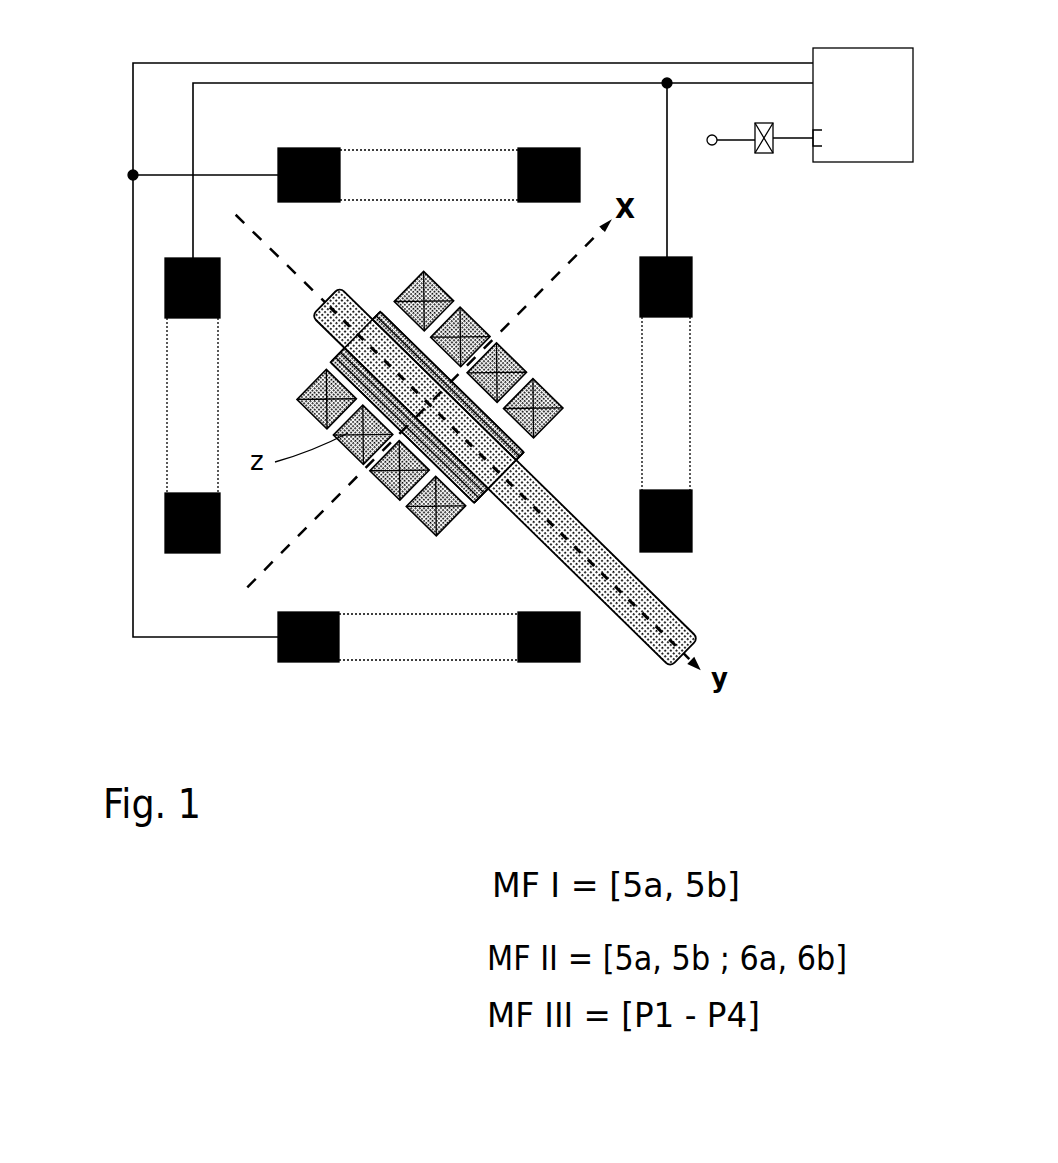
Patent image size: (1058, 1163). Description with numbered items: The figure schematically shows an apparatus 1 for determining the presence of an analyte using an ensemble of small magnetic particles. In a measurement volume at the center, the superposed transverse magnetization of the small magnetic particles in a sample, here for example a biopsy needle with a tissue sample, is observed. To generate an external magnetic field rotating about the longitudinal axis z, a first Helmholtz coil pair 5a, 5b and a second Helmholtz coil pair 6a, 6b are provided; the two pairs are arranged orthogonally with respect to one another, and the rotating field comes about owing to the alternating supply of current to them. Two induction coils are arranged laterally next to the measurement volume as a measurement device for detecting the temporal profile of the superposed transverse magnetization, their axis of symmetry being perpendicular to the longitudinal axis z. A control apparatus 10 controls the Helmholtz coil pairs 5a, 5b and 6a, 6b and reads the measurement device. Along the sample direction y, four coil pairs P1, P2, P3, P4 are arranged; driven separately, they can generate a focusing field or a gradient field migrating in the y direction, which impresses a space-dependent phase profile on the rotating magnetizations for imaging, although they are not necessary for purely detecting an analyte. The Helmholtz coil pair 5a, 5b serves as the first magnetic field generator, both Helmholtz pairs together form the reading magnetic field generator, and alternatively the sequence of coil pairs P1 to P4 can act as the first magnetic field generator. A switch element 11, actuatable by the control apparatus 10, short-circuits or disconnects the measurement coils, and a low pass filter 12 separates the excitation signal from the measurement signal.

The apparatus 1 is at (588, 752).
The first Helmholtz coil 5a is at (705, 290).
The first Helmholtz coil 5b is at (150, 298).
The second Helmholtz coil 6a is at (540, 148).
The second Helmholtz coil 6b is at (310, 662).
The control apparatus 10 is at (520, 342).
The switch element 11 is at (828, 142).
The low pass filter 12 is at (757, 158).
The coil pair P1 is at (433, 291).
The coil pair P2 is at (470, 327).
The coil pair P3 is at (506, 363).
The coil pair P4 is at (543, 398).